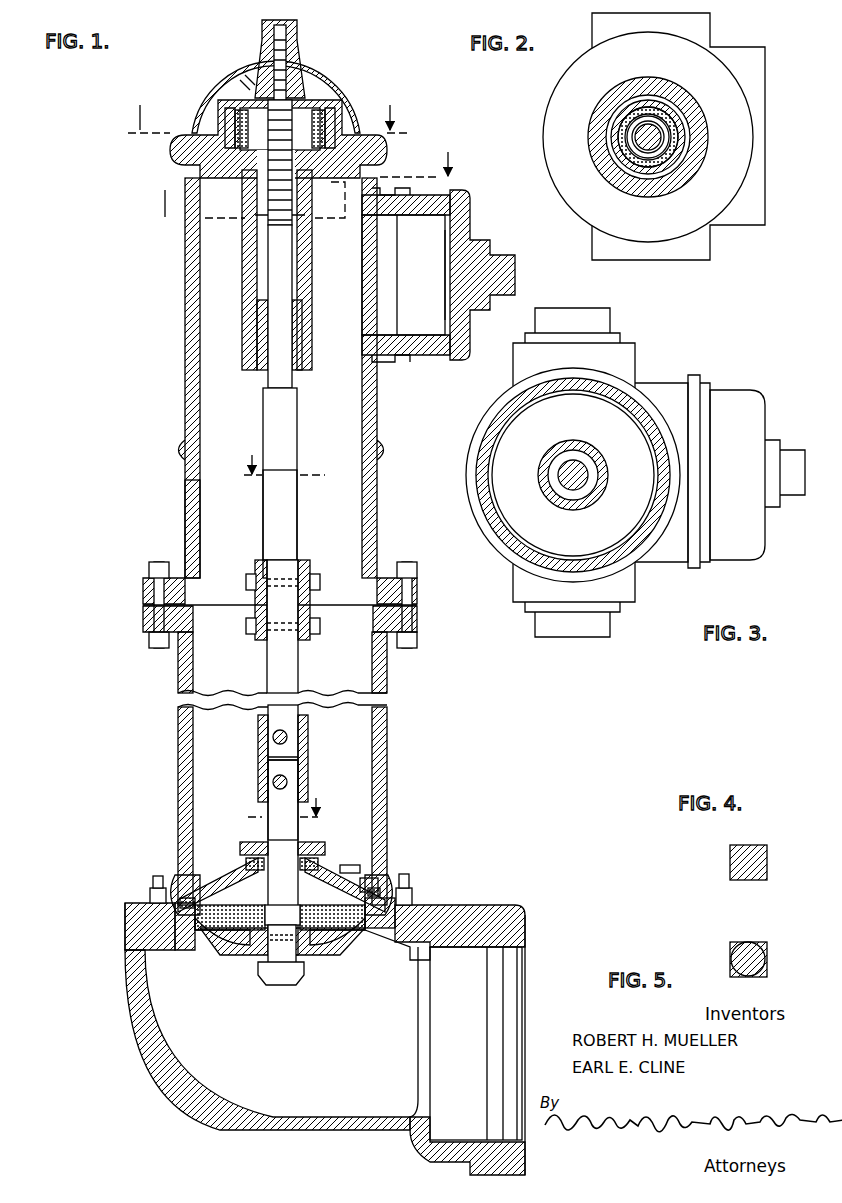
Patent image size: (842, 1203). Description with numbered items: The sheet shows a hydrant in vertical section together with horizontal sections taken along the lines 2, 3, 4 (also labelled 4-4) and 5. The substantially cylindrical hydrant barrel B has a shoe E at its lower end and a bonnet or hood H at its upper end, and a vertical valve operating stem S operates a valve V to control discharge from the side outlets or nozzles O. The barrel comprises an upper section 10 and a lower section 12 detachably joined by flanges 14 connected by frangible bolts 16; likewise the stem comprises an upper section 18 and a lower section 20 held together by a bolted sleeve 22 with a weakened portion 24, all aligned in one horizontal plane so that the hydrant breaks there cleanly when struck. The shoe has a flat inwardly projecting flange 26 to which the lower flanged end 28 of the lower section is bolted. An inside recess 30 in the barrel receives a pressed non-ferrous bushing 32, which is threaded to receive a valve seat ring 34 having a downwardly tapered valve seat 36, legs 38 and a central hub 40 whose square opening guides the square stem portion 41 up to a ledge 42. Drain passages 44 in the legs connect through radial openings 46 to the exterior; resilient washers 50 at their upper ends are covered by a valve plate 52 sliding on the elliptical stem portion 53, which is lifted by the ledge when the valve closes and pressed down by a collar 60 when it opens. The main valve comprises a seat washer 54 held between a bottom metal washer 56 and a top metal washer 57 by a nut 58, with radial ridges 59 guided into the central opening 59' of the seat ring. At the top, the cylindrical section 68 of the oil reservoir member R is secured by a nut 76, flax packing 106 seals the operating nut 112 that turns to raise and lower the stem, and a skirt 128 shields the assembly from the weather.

In FIG. 1, the upper barrel section 10 is at (369, 548).
In FIG. 3, the upper barrel section 10 is at (490, 505).
In FIG. 1, the lower barrel section 12 is at (388, 680).
In FIG. 1, the flanges 14 is at (417, 594).
In FIG. 1, the frangible bolts 16 is at (412, 620).
In FIG. 1, the upper valve stem section 18 is at (288, 539).
In FIG. 2, the upper valve stem section 18 is at (658, 130).
In FIG. 3, the upper valve stem section 18 is at (582, 470).
In FIG. 1, the lower valve stem section 20 is at (290, 668).
In FIG. 1, the sleeve 22 is at (262, 591).
In FIG. 1, the weakened portion 24 is at (312, 598).
In FIG. 1, the inwardly projecting flange 26 is at (395, 945).
In FIG. 1, the lower flanged end 28 is at (400, 930).
In FIG. 1, the inside recess 30 is at (376, 886).
In FIG. 1, the bushing 32 is at (425, 908).
In FIG. 1, the valve seat ring 34 is at (196, 915).
In FIG. 1, the valve seat 36 is at (200, 932).
In FIG. 1, the legs 38 is at (182, 877).
In FIG. 1, the central hub 40 is at (352, 862).
In FIG. 1, the square stem portion 41 is at (268, 950).
In FIG. 1, the ledge 42 is at (300, 850).
In FIG. 5, the ledge 42 is at (767, 945).
In FIG. 1, the drain passages 44 is at (222, 880).
In FIG. 1, the radial openings 46 is at (160, 914).
In FIG. 1, the resilient washers 50 is at (250, 860).
In FIG. 1, the valve plate 52 is at (322, 844).
In FIG. 1, the elliptical stem portion 53 is at (283, 838).
In FIG. 5, the elliptical stem portion 53 is at (755, 960).
In FIG. 1, the seat washer 54 is at (206, 940).
In FIG. 1, the bottom metal washer 56 is at (318, 945).
In FIG. 1, the top metal washer 57 is at (335, 935).
In FIG. 1, the nut 58 is at (276, 987).
In FIG. 1, the radial ridges 59 is at (406, 880).
In FIG. 1, the central opening 59' is at (121, 919).
In FIG. 1, the collar 60 is at (302, 790).
In FIG. 2, the cylindrical section 68 is at (700, 138).
In FIG. 2, the nut 76 is at (590, 158).
In FIG. 2, the flax packing 106 is at (621, 178).
In FIG. 2, the valve stem operating nut 112 is at (676, 180).
In FIG. 1, the skirt 128 is at (222, 104).
In FIG. 1, the section line 2— 2 is at (268, 125).
In FIG. 1, the section line 3— 3 is at (314, 192).
In FIG. 1, the section line 4— 4 is at (286, 469).
In FIG. 1, the section line 4—4 4-4 is at (362, 868).
In FIG. 1, the section line 5— 5 is at (284, 812).
In FIG. 1, the hydrant barrel B is at (384, 506).
In FIG. 2, the hydrant barrel B is at (548, 104).
In FIG. 1, the bonnet or hood H is at (335, 77).
In FIG. 1, the oil reservoir member R is at (312, 262).
In FIG. 3, the oil reservoir member R is at (565, 440).
In FIG. 1, the side outlets or nozzles O is at (478, 230).
In FIG. 3, the side outlets or nozzles O is at (770, 418).
In FIG. 1, the valve operating stem S is at (272, 518).
In FIG. 1, the valve V is at (228, 952).
In FIG. 1, the shoe E is at (166, 1085).